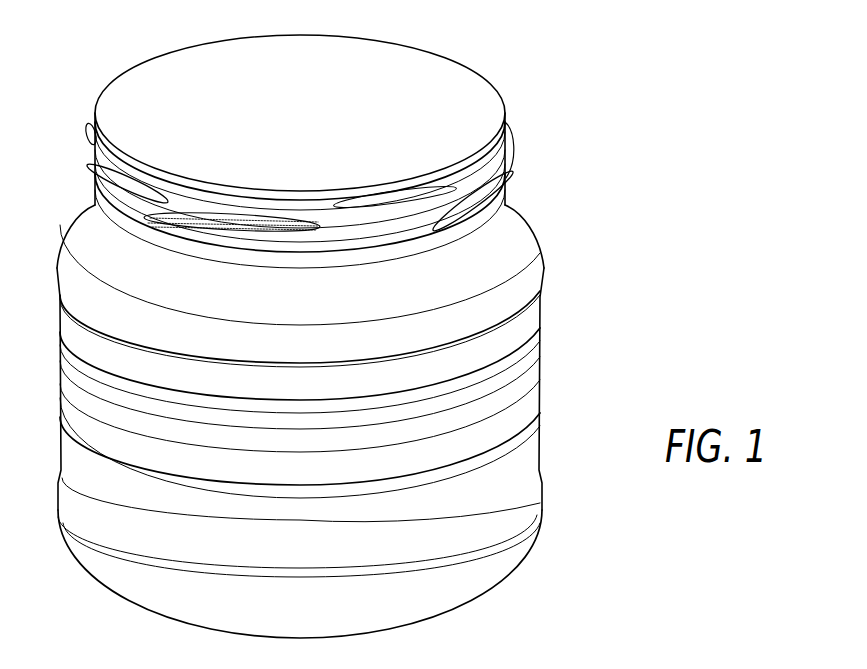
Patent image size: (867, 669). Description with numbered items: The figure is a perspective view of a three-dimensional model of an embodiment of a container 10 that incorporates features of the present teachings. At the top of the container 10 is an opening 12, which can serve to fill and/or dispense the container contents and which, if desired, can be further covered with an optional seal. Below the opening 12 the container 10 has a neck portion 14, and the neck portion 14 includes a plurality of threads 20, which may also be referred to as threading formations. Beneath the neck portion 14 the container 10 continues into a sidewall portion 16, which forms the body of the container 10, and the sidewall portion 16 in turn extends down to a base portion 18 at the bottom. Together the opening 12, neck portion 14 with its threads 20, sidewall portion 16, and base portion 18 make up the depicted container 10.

The container 10 is at (638, 133).
The opening 12 is at (428, 80).
The neck portion 14 is at (524, 138).
The sidewall portion 16 is at (563, 188).
The base portion 18 is at (518, 592).
The threads 20 is at (514, 170).